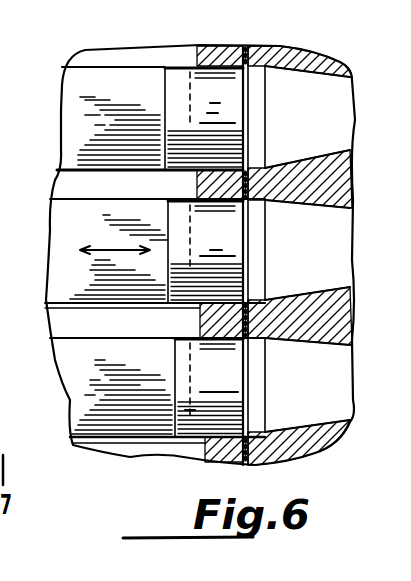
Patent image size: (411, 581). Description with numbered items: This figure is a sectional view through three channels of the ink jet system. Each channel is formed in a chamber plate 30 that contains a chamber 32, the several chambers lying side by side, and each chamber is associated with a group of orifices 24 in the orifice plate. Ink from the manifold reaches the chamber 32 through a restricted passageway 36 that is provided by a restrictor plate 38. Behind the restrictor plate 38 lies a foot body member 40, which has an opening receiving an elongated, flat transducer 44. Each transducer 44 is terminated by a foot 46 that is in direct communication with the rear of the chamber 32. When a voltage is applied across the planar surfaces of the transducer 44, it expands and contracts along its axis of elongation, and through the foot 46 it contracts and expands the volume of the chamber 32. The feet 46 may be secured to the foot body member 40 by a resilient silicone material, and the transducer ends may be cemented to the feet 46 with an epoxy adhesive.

The chamber plate 30 is at (297, 57).
The chamber 32 is at (323, 120).
The restricted passageway 36 is at (248, 137).
The restrictor plate 38 is at (241, 46).
The foot body member 40 is at (210, 46).
The transducer 44 is at (114, 80).
The foot 46 is at (177, 83).
The orifice 24 is at (0, 357).